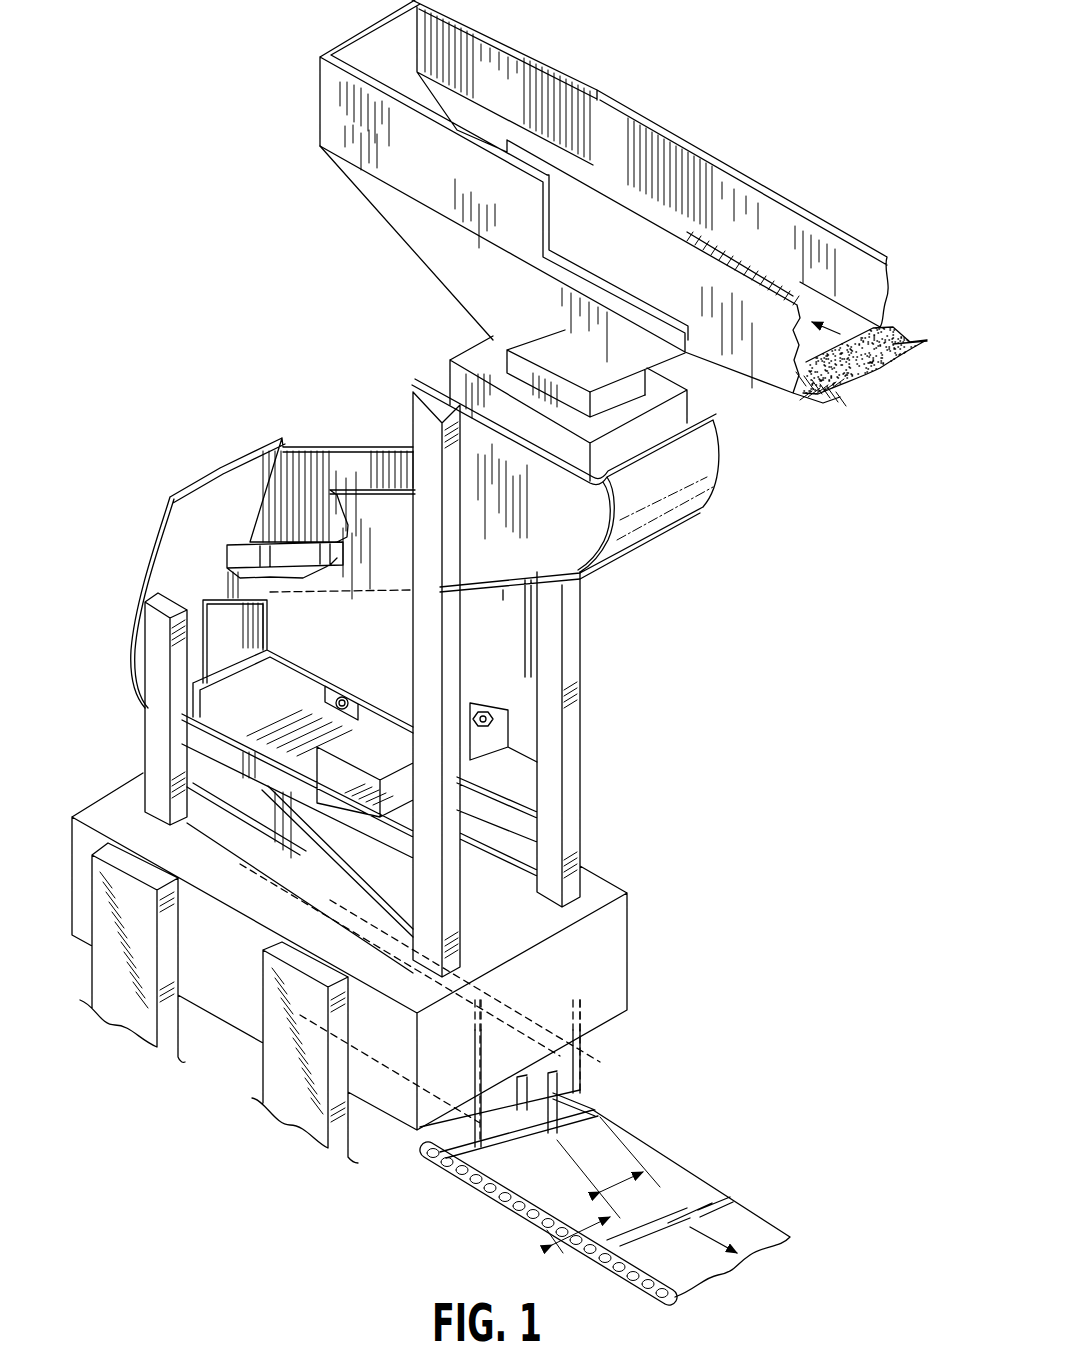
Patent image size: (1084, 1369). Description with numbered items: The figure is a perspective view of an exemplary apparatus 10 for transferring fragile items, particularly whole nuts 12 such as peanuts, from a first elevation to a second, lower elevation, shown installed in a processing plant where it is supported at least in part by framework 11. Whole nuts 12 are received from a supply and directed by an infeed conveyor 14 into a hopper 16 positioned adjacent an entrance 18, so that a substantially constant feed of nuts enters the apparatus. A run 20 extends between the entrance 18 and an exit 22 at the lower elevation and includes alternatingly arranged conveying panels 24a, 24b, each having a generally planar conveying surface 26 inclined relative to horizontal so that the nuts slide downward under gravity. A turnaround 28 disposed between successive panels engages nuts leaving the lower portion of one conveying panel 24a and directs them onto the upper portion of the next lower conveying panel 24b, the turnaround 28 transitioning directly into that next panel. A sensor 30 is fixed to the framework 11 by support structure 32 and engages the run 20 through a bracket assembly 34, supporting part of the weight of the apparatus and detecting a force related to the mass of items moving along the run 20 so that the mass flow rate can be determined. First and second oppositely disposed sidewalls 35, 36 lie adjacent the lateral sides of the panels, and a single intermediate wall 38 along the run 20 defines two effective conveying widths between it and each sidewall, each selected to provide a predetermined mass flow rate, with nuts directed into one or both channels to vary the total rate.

The apparatus 10 is at (152, 160).
The framework 11 is at (148, 732).
The whole nuts 12 is at (897, 337).
The infeed conveyor 14 is at (733, 167).
The hopper 16 is at (470, 320).
The entrance 18 is at (703, 397).
The run 20 is at (173, 562).
The exit 22 is at (593, 1094).
The conveying panel 24a is at (505, 592).
The conveying panel 24b is at (520, 1143).
The conveying surface 26 is at (362, 893).
The turnaround 28 is at (137, 663).
The sensor 30 is at (497, 722).
The support structure 32 is at (493, 753).
The bracket assembly 34 is at (303, 655).
The first sidewall 35 is at (440, 1147).
The second sidewall 36 is at (580, 1072).
The intermediate wall 38 is at (580, 1098).